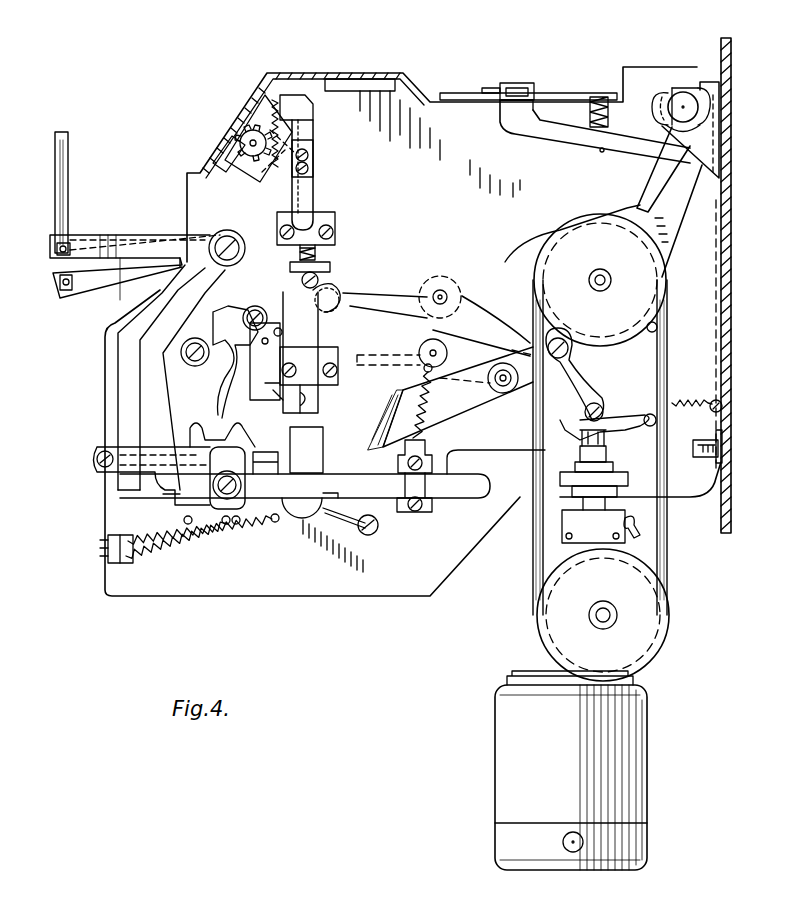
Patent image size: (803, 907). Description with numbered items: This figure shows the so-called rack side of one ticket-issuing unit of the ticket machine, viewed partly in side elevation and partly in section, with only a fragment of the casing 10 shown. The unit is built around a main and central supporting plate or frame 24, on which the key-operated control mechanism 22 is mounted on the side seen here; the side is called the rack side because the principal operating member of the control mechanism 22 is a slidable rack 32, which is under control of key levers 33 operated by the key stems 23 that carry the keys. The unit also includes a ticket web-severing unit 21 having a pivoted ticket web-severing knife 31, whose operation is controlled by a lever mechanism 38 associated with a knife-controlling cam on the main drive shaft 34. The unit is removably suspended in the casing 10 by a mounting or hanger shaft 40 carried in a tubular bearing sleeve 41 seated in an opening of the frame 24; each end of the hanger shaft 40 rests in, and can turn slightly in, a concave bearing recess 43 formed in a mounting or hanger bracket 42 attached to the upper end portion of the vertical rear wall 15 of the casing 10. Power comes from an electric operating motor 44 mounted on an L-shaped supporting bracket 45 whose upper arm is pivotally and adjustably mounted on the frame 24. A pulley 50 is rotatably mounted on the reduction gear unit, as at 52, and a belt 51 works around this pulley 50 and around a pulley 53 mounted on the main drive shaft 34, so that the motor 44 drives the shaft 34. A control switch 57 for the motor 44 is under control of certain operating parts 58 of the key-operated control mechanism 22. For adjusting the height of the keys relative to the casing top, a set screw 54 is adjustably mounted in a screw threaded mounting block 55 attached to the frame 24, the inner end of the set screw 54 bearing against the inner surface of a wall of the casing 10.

The casing 10 is at (746, 372).
The rear wall 15 is at (733, 310).
The ticket web-severing unit 21 is at (507, 81).
The control mechanism 22 is at (330, 263).
The key stem 23 is at (63, 172).
The supporting plate or frame 24 is at (458, 226).
The ticket web-severing knife 31 is at (478, 93).
The slidable rack 32 is at (305, 195).
The key lever 33 is at (128, 385).
The main drive shaft 34 is at (600, 285).
The lever mechanism 38 is at (581, 134).
The mounting or hanger shaft 40 is at (686, 96).
The tubular bearing sleeve 41 is at (670, 90).
The mounting or hanger bracket 42 is at (712, 138).
The concave bearing recess 43 is at (672, 132).
The electric operating motor 44 is at (620, 760).
The L-shaped supporting bracket 45 is at (519, 524).
The pulley 50 is at (643, 627).
The belt 51 is at (670, 552).
The pulley mounting 52 is at (612, 612).
The pulley 53 is at (565, 262).
The set screw 54 is at (700, 425).
The screw threaded mounting block 55 is at (733, 445).
The control switch 57 is at (611, 463).
The operating parts 58 is at (596, 391).